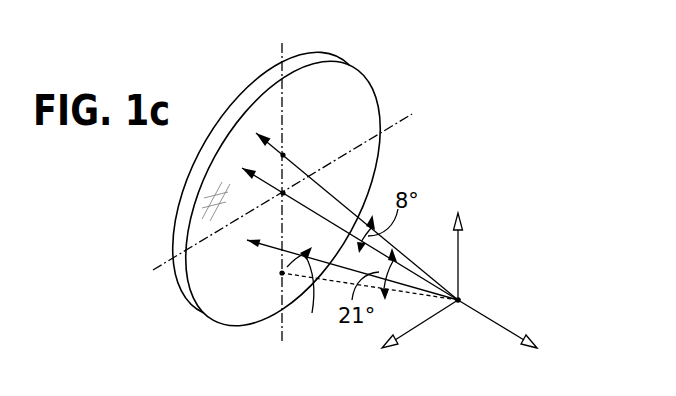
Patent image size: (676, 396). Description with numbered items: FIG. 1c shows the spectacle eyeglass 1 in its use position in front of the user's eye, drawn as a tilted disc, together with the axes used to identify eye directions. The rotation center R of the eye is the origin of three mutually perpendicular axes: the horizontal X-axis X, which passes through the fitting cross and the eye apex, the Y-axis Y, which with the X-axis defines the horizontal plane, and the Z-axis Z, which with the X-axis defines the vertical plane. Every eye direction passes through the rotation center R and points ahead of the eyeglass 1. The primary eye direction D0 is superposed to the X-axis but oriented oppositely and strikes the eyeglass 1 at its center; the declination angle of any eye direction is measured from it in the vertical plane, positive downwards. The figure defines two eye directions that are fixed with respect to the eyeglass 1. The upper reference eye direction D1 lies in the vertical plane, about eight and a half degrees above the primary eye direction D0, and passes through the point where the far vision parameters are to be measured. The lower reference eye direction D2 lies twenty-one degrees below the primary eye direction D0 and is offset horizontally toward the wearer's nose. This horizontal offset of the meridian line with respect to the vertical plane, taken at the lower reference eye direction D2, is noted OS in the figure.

The eyeglass 1 is at (238, 313).
The primary eye direction D0 is at (347, 221).
The upper reference eye direction D1 is at (355, 203).
The lower reference eye direction D2 is at (348, 270).
The rotation center of the eye R is at (468, 295).
The X-axis X is at (505, 331).
The Y-axis Y is at (412, 332).
The Z-axis Z is at (459, 243).
The offset OS is at (306, 292).